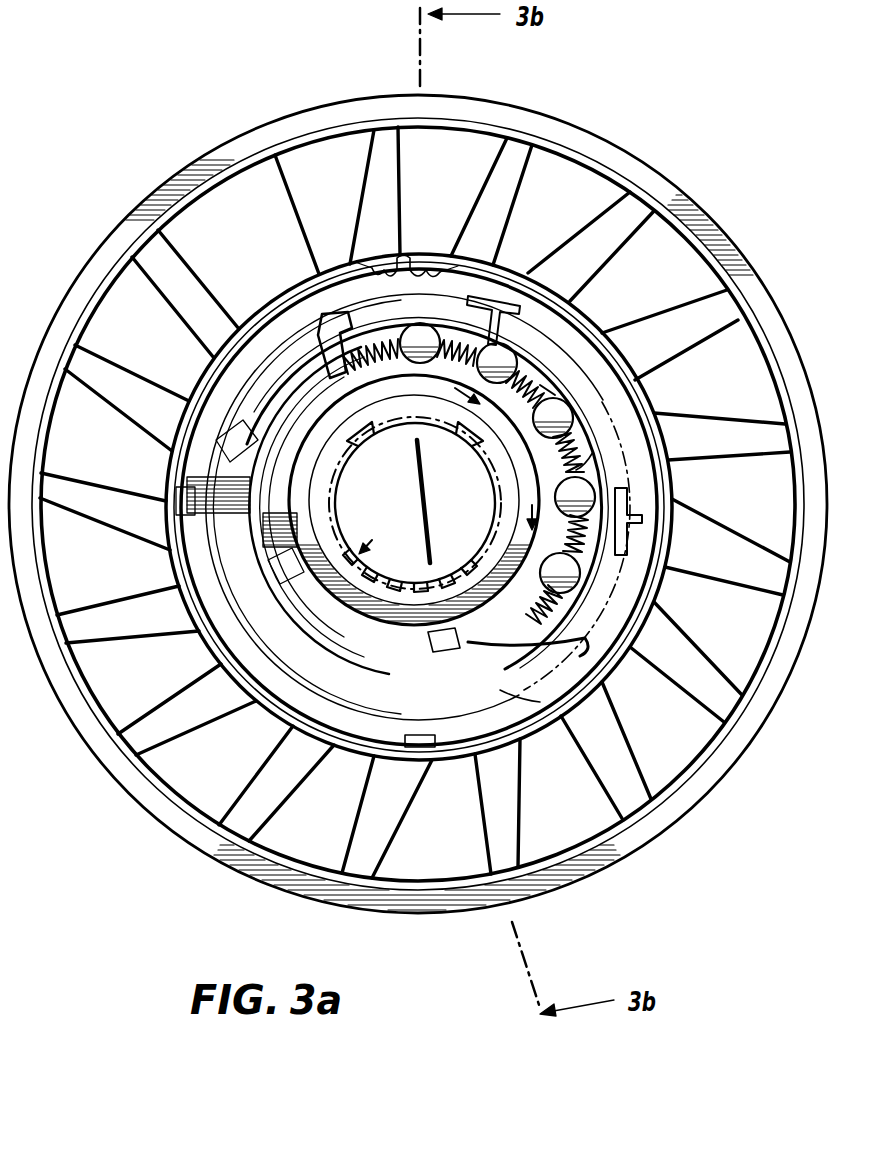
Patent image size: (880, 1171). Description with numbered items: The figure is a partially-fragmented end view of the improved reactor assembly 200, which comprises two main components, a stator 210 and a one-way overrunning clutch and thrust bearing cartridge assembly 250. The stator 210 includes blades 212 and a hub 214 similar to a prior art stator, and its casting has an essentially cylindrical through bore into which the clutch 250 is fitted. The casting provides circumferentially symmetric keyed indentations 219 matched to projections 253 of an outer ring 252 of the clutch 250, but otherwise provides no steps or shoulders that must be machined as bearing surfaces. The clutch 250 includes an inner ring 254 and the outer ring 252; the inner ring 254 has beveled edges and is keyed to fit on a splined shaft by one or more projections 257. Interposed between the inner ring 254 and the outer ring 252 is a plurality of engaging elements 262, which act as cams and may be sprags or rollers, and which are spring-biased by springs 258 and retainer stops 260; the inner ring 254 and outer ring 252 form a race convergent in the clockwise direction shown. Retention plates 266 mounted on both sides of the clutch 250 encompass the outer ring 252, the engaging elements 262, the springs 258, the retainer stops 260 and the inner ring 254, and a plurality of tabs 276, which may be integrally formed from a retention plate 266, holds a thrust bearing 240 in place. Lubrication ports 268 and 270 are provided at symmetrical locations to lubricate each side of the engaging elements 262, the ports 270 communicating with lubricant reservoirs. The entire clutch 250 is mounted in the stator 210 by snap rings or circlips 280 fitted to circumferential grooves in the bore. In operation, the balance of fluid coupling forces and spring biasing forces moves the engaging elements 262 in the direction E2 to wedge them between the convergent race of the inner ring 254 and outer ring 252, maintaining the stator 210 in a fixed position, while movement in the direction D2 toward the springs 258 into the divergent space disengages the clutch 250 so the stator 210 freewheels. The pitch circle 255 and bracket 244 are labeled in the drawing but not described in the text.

The reactor assembly 200 is at (243, 103).
The stator 210 is at (110, 765).
The blades 212 is at (526, 152).
The hub 214 is at (338, 262).
The keyed indentations 219 is at (437, 748).
The thrust bearing 240 is at (272, 364).
The bracket 244 is at (648, 578).
The overrunning clutch and thrust bearing cartridge assembly 250 is at (366, 550).
The outer ring 252 is at (372, 312).
The projections 253 is at (412, 262).
The inner ring 254 is at (390, 398).
The pitch circle 255 is at (500, 460).
The projections 257 is at (462, 562).
The springs 258 is at (598, 372).
The retainer stops 260 is at (562, 328).
The engaging elements 262 is at (500, 338).
The retention plates 266 is at (282, 473).
The lubrication ports 268 is at (432, 652).
The lubrication ports 270 is at (530, 724).
The tabs 276 is at (470, 668).
The snap rings or circlips 280 is at (205, 552).
The direction of disengagement D2 is at (555, 366).
The direction of engagement E2 is at (595, 447).